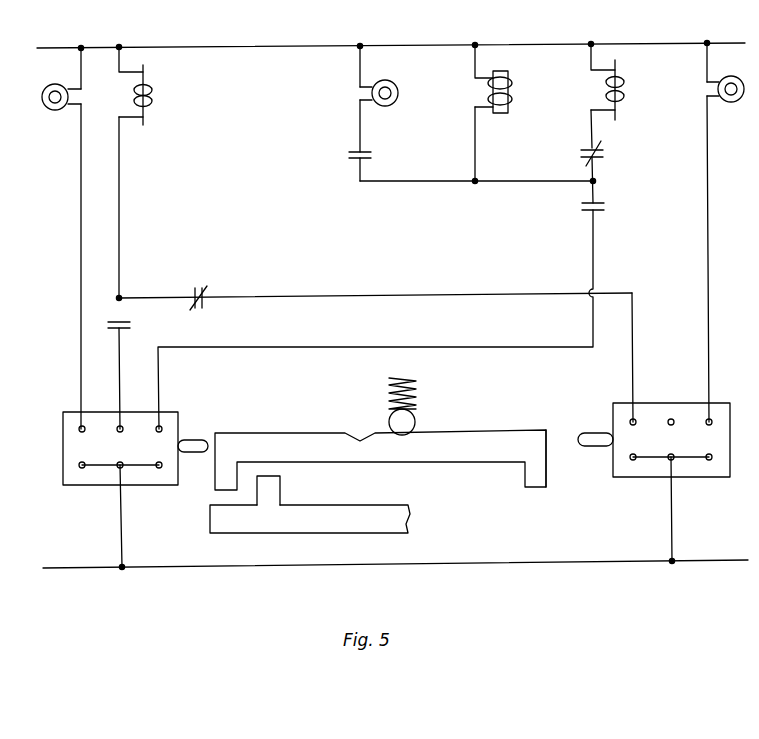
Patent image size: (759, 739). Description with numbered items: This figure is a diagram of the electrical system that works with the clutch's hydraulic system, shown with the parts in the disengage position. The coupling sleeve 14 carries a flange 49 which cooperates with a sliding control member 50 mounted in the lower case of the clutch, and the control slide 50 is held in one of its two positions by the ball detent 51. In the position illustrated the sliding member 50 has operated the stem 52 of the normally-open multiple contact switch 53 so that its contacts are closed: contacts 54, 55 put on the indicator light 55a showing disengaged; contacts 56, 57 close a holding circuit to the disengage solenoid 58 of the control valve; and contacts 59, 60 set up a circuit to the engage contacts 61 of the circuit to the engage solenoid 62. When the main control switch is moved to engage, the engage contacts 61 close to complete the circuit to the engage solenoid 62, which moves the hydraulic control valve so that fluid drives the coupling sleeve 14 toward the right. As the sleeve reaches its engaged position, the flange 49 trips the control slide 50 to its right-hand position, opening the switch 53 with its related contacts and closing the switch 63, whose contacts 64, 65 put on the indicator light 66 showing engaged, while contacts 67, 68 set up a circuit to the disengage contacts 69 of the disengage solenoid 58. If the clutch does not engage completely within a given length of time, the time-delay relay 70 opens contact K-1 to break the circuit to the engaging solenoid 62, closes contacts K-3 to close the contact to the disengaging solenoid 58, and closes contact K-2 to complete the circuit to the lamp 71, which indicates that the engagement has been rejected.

The coupling sleeve 14 is at (283, 530).
The flange 49 is at (281, 488).
The sliding control member 50 is at (488, 436).
The ball detent 51 is at (415, 422).
The stem 52 is at (200, 440).
The normally-open multiple contact switch 53 is at (63, 458).
The contact 54 is at (79, 428).
The contact 55 is at (82, 469).
The indicator light 55a is at (47, 110).
The contact 56 is at (121, 426).
The contact 57 is at (121, 469).
The disengage solenoid 58 is at (152, 99).
The contact 59 is at (161, 427).
The contact 60 is at (161, 469).
The engage contacts 61 is at (597, 214).
The engage solenoid 62 is at (625, 92).
The switch 63 is at (638, 478).
The contact 64 is at (711, 420).
The contact 65 is at (711, 460).
The indicator light 66 is at (726, 103).
The contact 67 is at (630, 420).
The contact 68 is at (630, 459).
The disengage contacts 69 is at (205, 298).
The time-delay relay 70 is at (512, 94).
The lamp 71 is at (399, 95).
The contact K-1 is at (598, 160).
The contact K-2 is at (356, 163).
The contacts K-3 is at (124, 332).